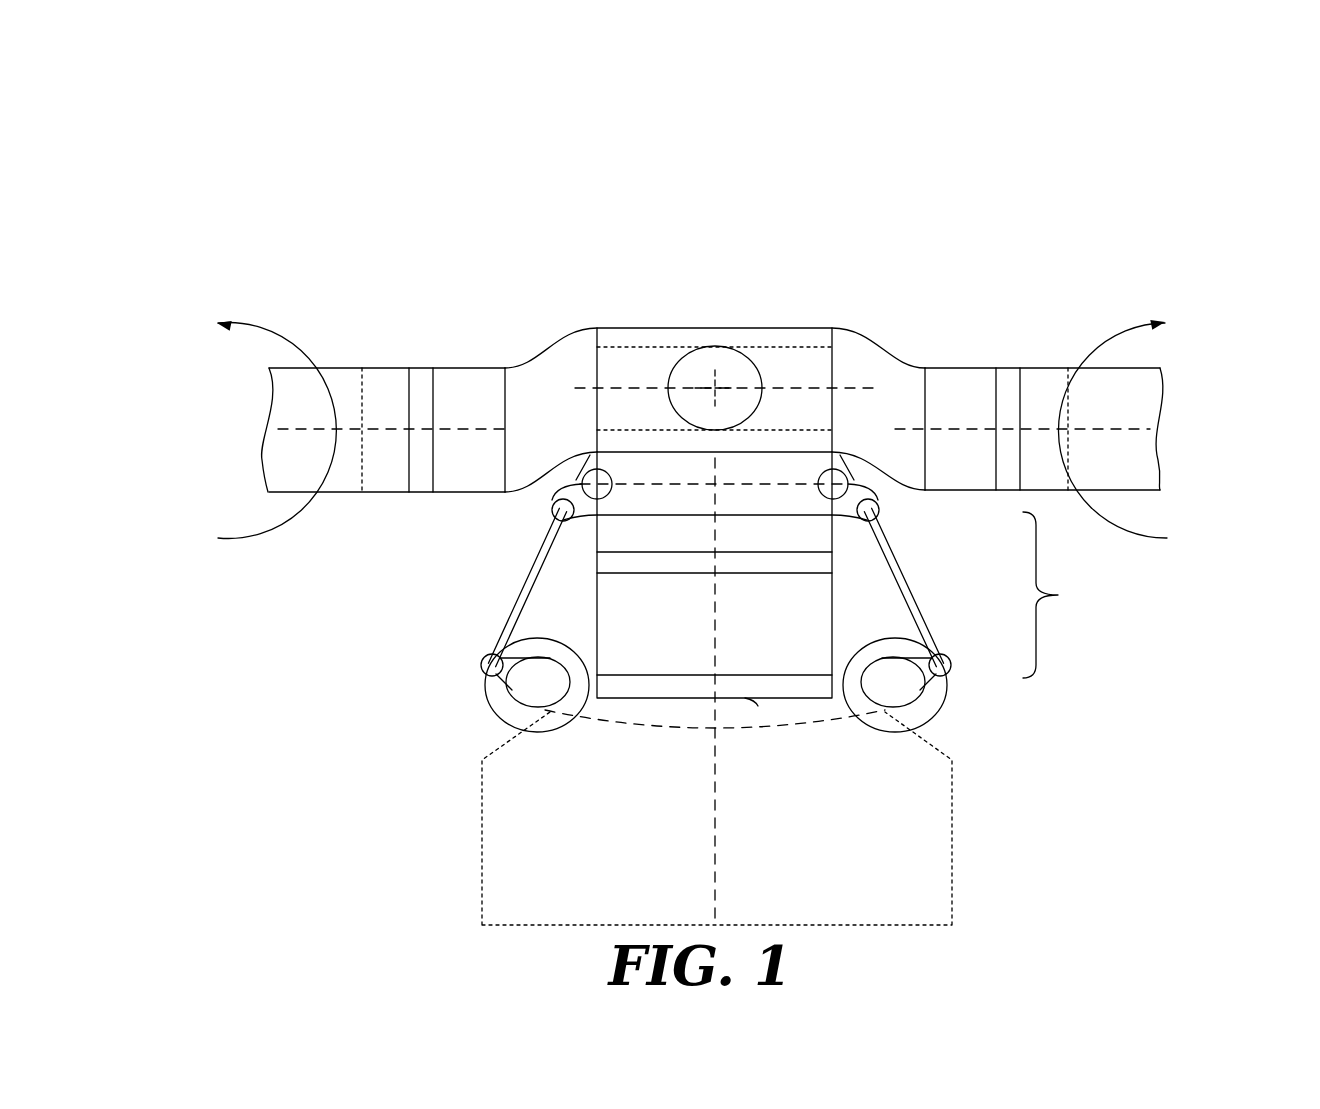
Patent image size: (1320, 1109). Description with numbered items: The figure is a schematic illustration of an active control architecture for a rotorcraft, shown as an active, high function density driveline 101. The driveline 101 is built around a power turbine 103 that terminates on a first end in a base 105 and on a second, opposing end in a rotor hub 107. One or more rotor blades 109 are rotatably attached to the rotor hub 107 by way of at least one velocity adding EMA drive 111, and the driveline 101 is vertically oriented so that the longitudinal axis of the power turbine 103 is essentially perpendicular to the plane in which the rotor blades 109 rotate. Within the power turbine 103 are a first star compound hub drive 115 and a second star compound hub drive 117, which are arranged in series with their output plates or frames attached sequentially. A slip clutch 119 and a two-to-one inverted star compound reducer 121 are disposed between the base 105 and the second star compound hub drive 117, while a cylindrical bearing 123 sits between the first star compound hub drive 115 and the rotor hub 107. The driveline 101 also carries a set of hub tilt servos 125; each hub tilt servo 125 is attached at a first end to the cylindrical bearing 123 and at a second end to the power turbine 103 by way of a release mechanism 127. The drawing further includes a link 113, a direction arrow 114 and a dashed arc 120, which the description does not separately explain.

The driveline 101 is at (236, 147).
The power turbine 103 is at (716, 327).
The base 105 is at (1165, 396).
The rotor hub 107 is at (962, 367).
The rotor blades 109 is at (291, 335).
The velocity adding EMA drive 111 is at (606, 496).
The landing gear link 113 is at (520, 585).
The direction arrow 114 is at (697, 530).
The first star compound hub drive 115 is at (759, 705).
The second star compound hub drive 117 is at (833, 575).
The slip clutch 119 is at (714, 545).
The dashed arc 120 is at (662, 728).
The 2-to-1 inverted star compound reducer 121 is at (714, 641).
The cylindrical bearing 123 is at (935, 705).
The hub tilt servo 125 is at (953, 843).
The release mechanism 127 is at (718, 842).